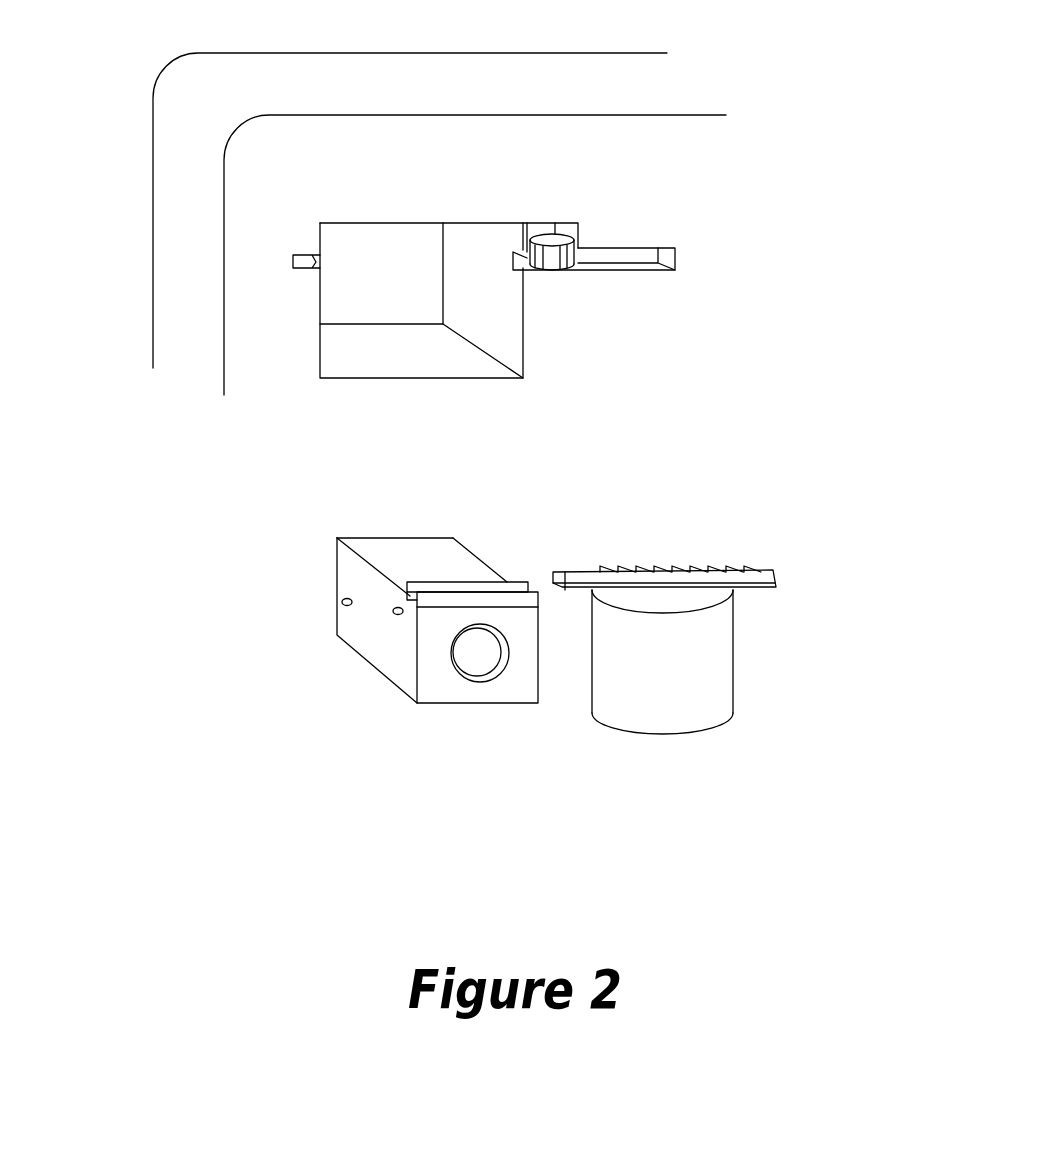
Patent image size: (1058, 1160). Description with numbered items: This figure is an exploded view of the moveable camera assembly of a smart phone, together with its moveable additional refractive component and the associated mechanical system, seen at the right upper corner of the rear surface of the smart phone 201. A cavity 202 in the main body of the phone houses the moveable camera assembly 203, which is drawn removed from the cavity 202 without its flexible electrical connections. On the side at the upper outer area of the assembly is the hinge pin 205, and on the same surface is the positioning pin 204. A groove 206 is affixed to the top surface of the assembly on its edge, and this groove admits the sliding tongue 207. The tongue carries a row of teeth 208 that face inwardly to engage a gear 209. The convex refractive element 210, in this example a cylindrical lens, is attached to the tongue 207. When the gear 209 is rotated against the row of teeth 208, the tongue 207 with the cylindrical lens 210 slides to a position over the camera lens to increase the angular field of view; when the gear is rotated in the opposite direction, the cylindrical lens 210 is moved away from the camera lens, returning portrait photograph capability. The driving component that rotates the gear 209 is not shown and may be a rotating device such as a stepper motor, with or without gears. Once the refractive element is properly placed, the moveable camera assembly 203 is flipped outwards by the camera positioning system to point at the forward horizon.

The rear surface of the smart phone 201 is at (303, 177).
The cavity 202 is at (353, 307).
The moveable camera assembly 203 is at (483, 732).
The positioning pin 204 is at (325, 590).
The hinge pin 205 is at (400, 633).
The groove 206 is at (470, 578).
The sliding tongue 207 is at (563, 557).
The row of teeth 208 is at (690, 552).
The gear 209 is at (552, 282).
The convex refractive element 210 is at (668, 678).